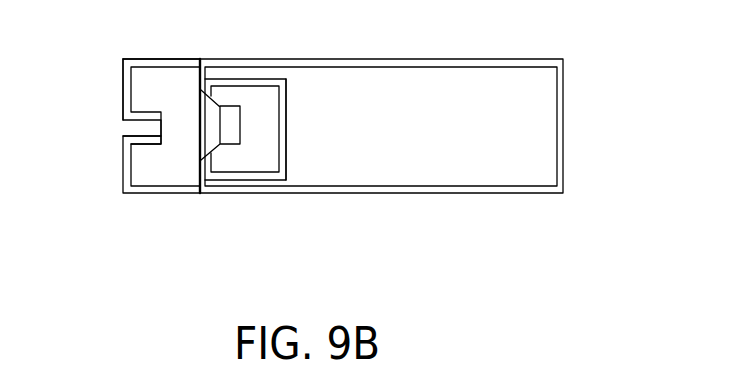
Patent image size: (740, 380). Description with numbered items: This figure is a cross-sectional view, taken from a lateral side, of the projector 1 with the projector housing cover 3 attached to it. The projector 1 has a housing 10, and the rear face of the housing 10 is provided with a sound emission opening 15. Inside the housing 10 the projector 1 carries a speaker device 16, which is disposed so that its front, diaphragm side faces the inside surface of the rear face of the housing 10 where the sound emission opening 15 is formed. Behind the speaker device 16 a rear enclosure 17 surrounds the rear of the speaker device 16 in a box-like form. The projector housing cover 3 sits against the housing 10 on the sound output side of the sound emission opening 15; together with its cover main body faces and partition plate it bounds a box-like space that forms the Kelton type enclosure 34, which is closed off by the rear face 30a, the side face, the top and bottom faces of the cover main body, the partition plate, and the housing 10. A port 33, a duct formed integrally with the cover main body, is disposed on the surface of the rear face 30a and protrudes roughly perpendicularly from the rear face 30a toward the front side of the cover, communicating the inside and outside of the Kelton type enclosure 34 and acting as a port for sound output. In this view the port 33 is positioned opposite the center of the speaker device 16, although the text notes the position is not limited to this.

The projector 1 is at (477, 59).
The projector housing cover 3 is at (185, 59).
The housing 10 is at (410, 59).
The sound emission opening 15 is at (199, 130).
The speaker device 16 is at (205, 152).
The rear enclosure 17 is at (286, 150).
The rear face 30a is at (122, 103).
The port 33 is at (128, 136).
The Kelton type enclosure 34 is at (146, 59).